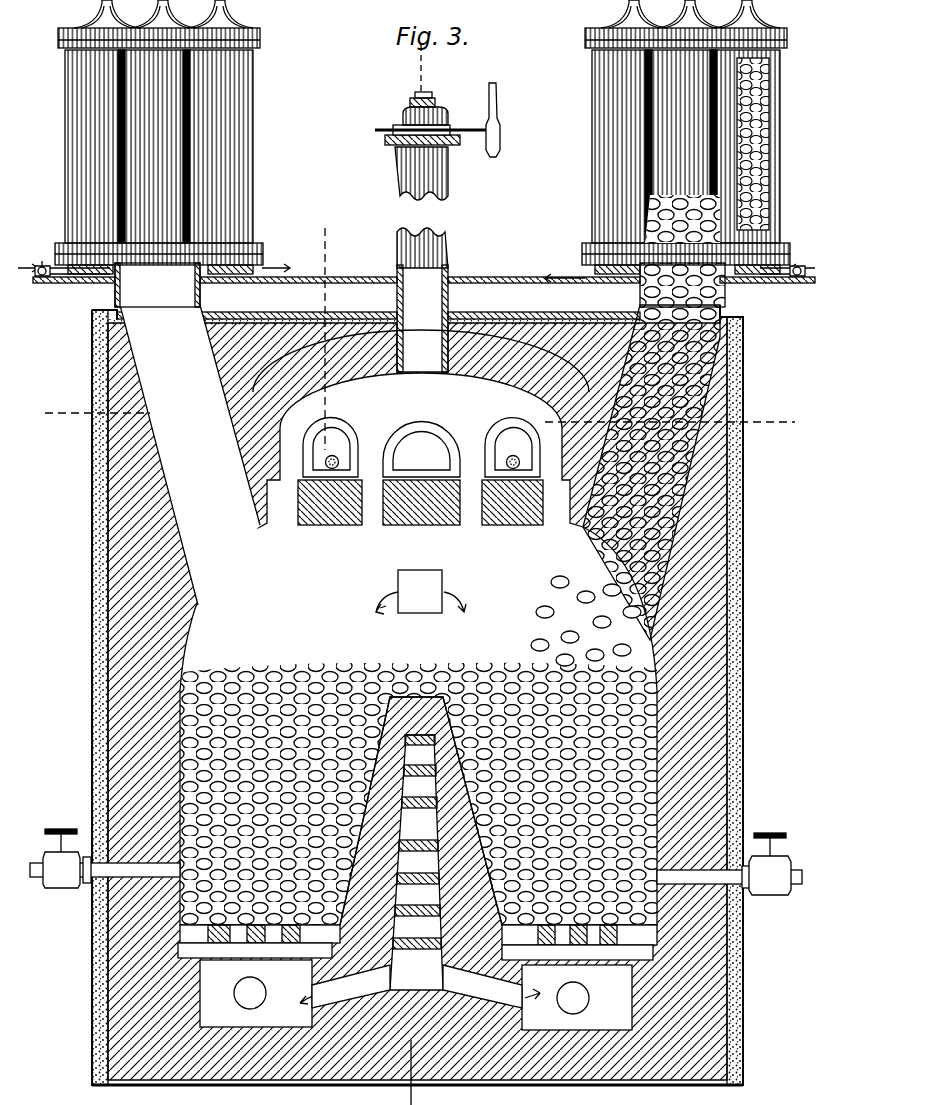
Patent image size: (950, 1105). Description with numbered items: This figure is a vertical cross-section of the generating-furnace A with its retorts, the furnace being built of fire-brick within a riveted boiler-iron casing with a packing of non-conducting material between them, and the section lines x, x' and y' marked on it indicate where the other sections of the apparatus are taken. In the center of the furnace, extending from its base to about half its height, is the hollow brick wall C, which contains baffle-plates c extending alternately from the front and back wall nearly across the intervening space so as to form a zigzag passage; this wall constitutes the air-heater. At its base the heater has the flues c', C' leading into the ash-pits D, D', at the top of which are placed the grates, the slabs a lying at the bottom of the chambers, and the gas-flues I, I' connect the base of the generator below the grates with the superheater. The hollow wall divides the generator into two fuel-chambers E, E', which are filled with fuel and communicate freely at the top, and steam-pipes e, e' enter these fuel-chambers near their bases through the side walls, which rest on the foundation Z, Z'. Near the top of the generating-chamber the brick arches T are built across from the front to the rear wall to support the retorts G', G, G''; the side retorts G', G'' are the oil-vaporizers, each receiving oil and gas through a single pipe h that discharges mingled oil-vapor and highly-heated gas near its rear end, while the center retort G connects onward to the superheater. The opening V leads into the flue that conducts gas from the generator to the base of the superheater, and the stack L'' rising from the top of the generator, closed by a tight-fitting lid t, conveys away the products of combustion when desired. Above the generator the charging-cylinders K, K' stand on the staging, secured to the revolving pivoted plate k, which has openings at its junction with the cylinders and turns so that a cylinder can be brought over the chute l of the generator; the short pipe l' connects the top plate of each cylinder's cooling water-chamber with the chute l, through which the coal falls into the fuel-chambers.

The generating-furnace A is at (414, 695).
The charging-cylinder K is at (151, 137).
The charging-cylinder K' is at (679, 137).
The revolving pivoted plate k is at (424, 259).
The chute l is at (444, 472).
The short pipe l' is at (435, 288).
The chimney L'' is at (407, 259).
The tight-fitting lid t is at (437, 120).
The side retort G' is at (330, 436).
The center retort G is at (421, 435).
The side retort G'' is at (512, 436).
The single pipe h is at (423, 454).
The brick arches T is at (420, 515).
The opening V is at (421, 592).
The fuel-chamber E is at (418, 794).
The fuel-chamber E' is at (586, 674).
The hollow brick wall C is at (421, 811).
The baffle-plates c is at (416, 862).
The grate slab a is at (417, 943).
The ash-pit D is at (268, 993).
The ash-pit D' is at (577, 997).
The gas-flue I' is at (237, 993).
The gas-flue I is at (578, 998).
The flue c' is at (351, 986).
The passage C' is at (482, 986).
The steam-pipe e is at (154, 576).
The steam-pipe e' is at (680, 579).
The foundation Z is at (231, 1037).
The foundation Z' is at (605, 1040).
The section line x is at (604, 239).
The section line x' is at (97, 403).
The section line y' is at (325, 327).